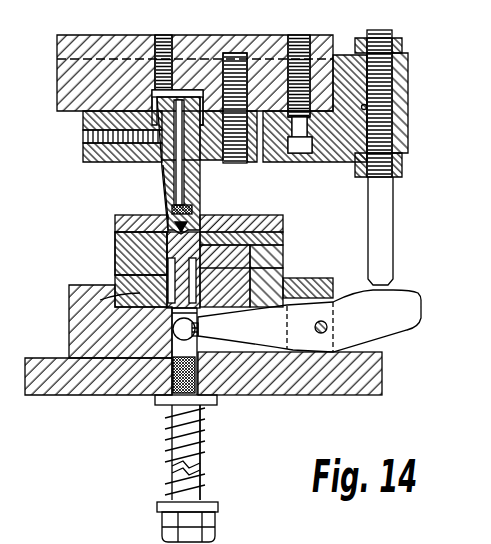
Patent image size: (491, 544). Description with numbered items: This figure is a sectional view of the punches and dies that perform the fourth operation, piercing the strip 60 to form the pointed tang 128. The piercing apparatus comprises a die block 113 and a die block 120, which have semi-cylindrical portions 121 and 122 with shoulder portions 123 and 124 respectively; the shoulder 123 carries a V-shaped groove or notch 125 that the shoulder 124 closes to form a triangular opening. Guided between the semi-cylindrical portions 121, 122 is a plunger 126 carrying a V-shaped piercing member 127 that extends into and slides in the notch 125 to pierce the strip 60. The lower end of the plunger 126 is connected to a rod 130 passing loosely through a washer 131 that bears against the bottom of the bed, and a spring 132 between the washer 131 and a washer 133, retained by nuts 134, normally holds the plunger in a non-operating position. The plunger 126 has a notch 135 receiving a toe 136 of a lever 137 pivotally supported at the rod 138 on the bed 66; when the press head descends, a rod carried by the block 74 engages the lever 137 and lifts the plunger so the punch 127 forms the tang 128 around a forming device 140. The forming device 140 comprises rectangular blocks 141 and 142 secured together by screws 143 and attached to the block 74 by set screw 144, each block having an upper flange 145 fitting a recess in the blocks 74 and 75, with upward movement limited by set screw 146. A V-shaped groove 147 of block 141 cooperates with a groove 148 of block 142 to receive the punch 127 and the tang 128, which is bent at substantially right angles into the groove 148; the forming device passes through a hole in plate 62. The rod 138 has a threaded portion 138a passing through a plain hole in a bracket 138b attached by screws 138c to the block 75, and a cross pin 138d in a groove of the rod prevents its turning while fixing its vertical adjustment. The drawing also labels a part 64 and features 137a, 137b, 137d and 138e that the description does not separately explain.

The block 75 is at (65, 75).
The block 74 is at (83, 123).
The set screw 144 is at (95, 138).
The flange 145 is at (151, 91).
The set screw 146 is at (163, 35).
The V-shaped groove 147 is at (200, 168).
The forming device 140 is at (185, 122).
The block 141 is at (200, 184).
The block 142 is at (175, 188).
The screws 143 is at (163, 177).
The groove 148 is at (172, 207).
The tang 128 is at (115, 228).
The plate 62 is at (284, 216).
The shim 64 is at (283, 233).
The shoulder portion 123 is at (284, 247).
The die block 113 is at (284, 260).
The semi-cylindrical portion 121 is at (286, 277).
The V-shaped groove or notch 125 is at (247, 215).
The strip 60 is at (115, 242).
The shoulder portion 124 is at (147, 258).
The die block 120 is at (115, 272).
The V-shaped piercing member 127 is at (100, 300).
The semi-cylindrical portion 122 is at (125, 312).
The bed 66 is at (33, 359).
The toe 136 is at (174, 326).
The notch 135 is at (173, 333).
The plunger 126 is at (173, 360).
The washer 131 is at (155, 402).
The rod 130 is at (168, 430).
The spring 132 is at (212, 442).
The washer 133 is at (218, 505).
The nuts 134 is at (215, 535).
The lever 137 is at (392, 330).
The pivot pin 137a is at (327, 326).
The lever end 137b is at (342, 273).
The support plate 137d is at (242, 355).
The rod 138 is at (393, 247).
The threaded portion 138a is at (392, 87).
The bracket 138b is at (410, 58).
The screws 138c is at (300, 153).
The cross pin 138d is at (397, 108).
The collar 138e is at (408, 37).